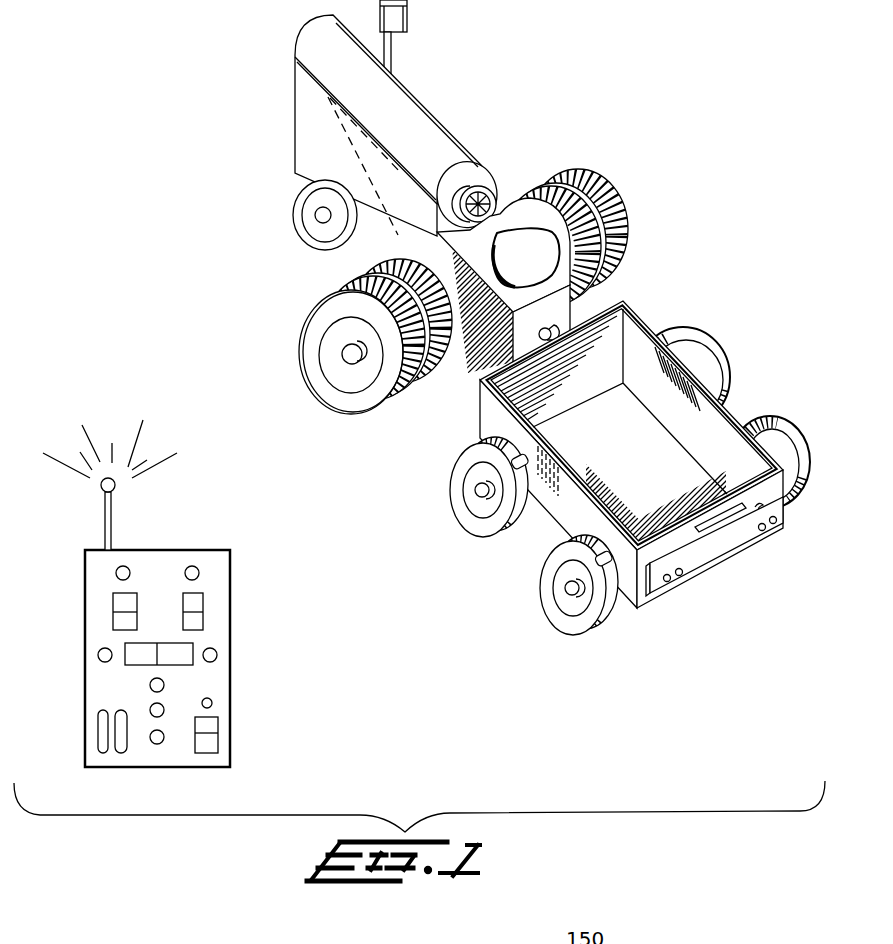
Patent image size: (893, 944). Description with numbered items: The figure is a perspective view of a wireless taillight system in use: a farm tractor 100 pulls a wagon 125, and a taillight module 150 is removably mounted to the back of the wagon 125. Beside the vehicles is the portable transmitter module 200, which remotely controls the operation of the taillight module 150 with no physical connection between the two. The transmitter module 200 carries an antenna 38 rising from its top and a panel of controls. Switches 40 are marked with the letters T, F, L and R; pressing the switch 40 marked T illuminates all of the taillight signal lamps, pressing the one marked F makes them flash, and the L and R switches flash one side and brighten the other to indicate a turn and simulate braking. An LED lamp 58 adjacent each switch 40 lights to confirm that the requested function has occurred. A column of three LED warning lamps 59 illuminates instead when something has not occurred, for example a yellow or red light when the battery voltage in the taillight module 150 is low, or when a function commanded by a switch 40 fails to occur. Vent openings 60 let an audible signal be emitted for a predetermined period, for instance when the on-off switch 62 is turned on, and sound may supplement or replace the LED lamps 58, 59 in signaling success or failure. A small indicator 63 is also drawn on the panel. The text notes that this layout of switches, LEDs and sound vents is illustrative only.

The farm tractor 100 is at (463, 112).
The wagon 125 is at (659, 307).
The taillight module 150 is at (703, 586).
The portable transmitter module 200 is at (191, 612).
The antenna 38 is at (113, 513).
The LED lamps 58 is at (192, 566).
The switches 40 is at (125, 648).
The LED warning lamps 59 is at (163, 688).
The vent openings 60 is at (97, 740).
The on-off switch 62 is at (220, 740).
The indicator 63 is at (213, 703).